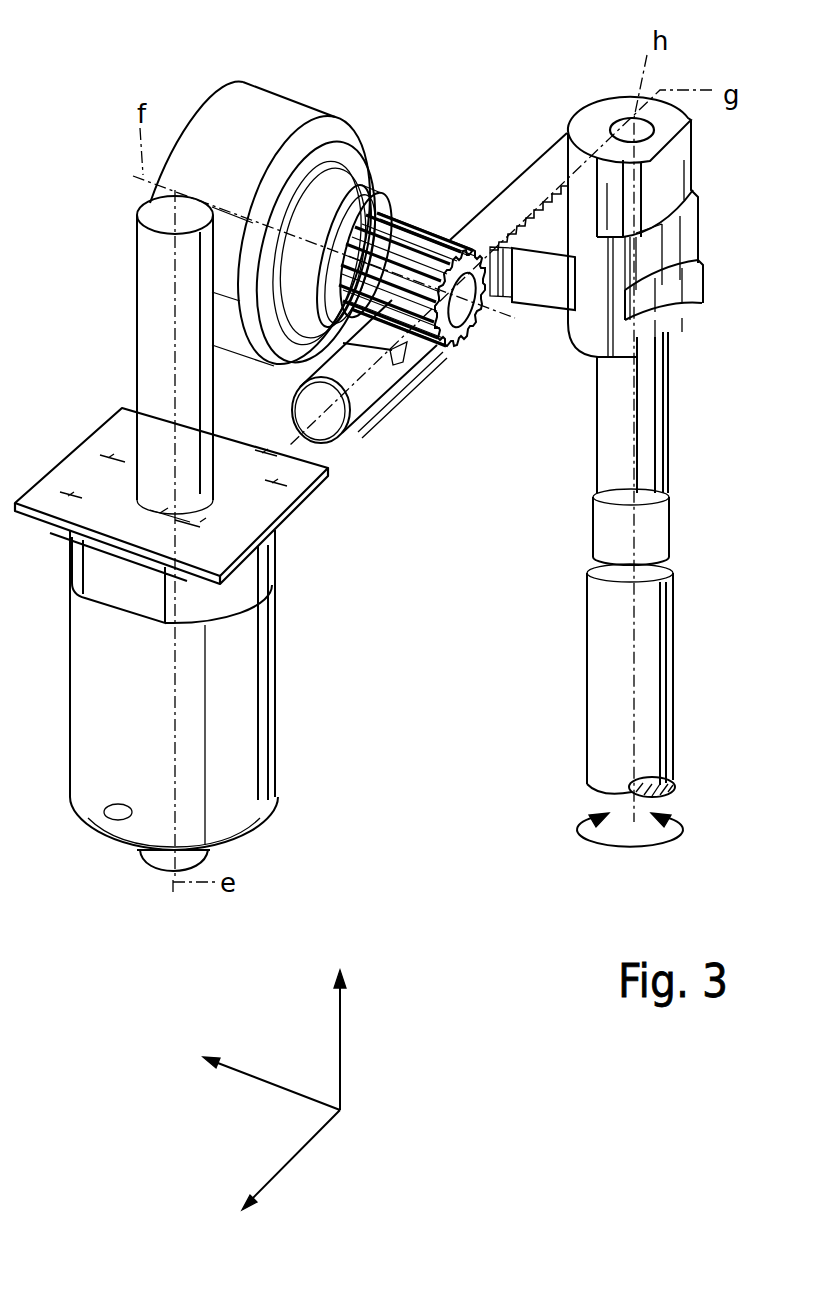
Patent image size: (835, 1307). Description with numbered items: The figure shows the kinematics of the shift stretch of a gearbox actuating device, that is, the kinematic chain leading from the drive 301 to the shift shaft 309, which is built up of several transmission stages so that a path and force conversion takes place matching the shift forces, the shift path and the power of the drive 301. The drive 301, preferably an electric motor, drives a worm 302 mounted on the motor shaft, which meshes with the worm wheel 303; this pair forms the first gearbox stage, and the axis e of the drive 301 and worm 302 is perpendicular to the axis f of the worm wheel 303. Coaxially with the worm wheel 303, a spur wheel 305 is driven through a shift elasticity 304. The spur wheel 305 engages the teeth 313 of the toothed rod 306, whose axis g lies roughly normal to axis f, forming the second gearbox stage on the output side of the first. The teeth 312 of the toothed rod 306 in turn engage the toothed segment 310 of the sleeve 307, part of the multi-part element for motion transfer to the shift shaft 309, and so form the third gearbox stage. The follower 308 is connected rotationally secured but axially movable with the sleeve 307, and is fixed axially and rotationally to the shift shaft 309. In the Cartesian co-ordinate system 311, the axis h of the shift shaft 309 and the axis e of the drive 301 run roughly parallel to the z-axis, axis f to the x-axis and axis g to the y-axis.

The drive 301 is at (240, 689).
The worm 302 is at (157, 329).
The worm wheel 303 is at (247, 100).
The shift elasticity 304 is at (341, 162).
The spur wheel 305 is at (421, 238).
The toothed rod 306 is at (378, 395).
The sleeve 307 is at (603, 110).
The follower 308 is at (704, 290).
The shift shaft 309 is at (603, 660).
The toothed segment 310 is at (548, 284).
The Cartesian co-ordinate system 311 is at (368, 1089).
The teeth of the toothed rod 312 is at (517, 232).
The teeth of the toothed rod 313 is at (395, 360).